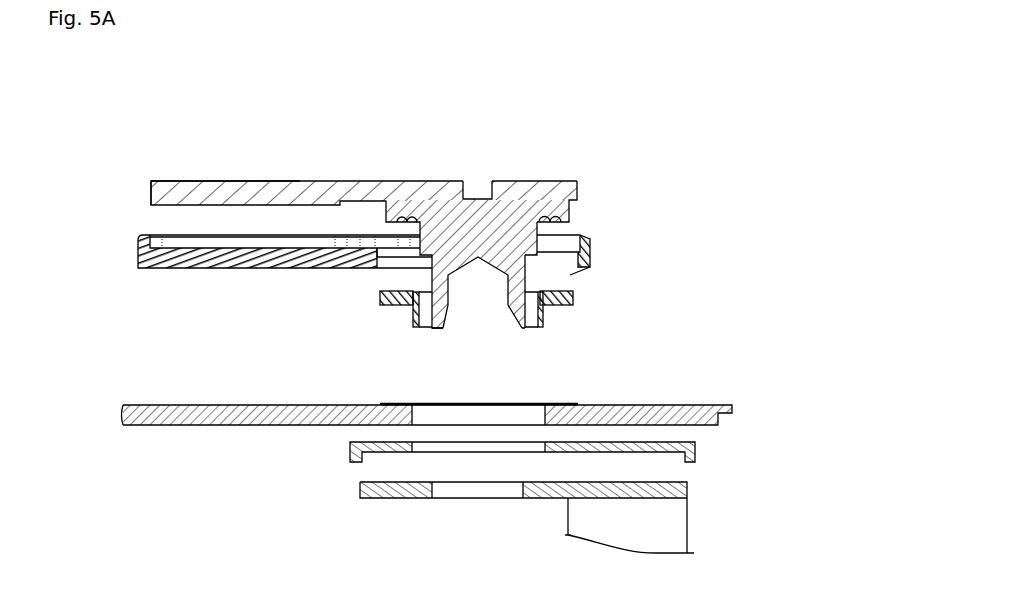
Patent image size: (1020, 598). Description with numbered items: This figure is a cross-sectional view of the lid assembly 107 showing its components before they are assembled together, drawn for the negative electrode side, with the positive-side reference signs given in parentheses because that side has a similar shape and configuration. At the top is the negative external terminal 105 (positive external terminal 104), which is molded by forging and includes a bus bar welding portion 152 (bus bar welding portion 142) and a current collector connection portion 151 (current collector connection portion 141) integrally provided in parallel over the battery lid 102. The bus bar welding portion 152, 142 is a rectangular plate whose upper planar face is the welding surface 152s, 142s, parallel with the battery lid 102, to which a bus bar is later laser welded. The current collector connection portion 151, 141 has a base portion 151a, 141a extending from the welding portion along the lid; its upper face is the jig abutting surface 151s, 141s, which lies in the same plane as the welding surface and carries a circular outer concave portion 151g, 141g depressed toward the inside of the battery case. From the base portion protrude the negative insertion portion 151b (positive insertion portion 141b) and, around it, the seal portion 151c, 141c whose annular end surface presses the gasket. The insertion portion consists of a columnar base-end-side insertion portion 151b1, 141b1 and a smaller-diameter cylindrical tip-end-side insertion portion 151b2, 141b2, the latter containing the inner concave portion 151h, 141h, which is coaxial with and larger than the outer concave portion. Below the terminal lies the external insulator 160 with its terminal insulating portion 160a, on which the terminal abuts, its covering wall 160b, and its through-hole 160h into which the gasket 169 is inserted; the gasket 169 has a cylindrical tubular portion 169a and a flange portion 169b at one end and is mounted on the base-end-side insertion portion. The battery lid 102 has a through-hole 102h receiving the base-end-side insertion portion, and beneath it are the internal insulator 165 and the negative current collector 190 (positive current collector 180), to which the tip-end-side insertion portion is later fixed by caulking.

The lid assembly 107 is at (755, 110).
The negative external terminal 105 is at (99, 150).
The positive external terminal 104 is at (150, 180).
The bus bar welding portion 152 is at (276, 164).
The bus bar welding portion 142 is at (187, 180).
The welding surface 152s is at (258, 139).
The welding surface 142s is at (278, 180).
The current collector connection portion 151 is at (539, 226).
The current collector connection portion 141 is at (573, 178).
The outer concave portion 151g is at (443, 161).
The outer concave portion 141g is at (473, 180).
The jig abutting surface 151s is at (539, 138).
The jig abutting surface 141s is at (530, 180).
The base portion 151a is at (666, 185).
The base portion 141a is at (582, 184).
The seal portion 151c is at (595, 201).
The seal portion 141c is at (570, 210).
The negative insertion portion 151b is at (661, 276).
The positive insertion portion 141b is at (530, 277).
The base-end-side insertion portion 151b1 is at (674, 251).
The base-end-side insertion portion 141b1 is at (537, 252).
The tip-end-side insertion portion 151b2 is at (595, 347).
The tip-end-side insertion portion 141b2 is at (525, 330).
The inner concave portion 151h is at (440, 322).
The inner concave portion 141h is at (458, 330).
The external insulator 160 is at (592, 240).
The terminal insulating portion 160a is at (175, 268).
The covering wall 160b is at (138, 243).
The through-hole 160h is at (570, 275).
The gasket 169 is at (380, 296).
The tubular portion 169a is at (413, 310).
The flange portion 169b is at (383, 303).
The battery lid 102 is at (192, 425).
The through-hole 102h is at (536, 405).
The internal insulator 165 is at (350, 462).
The negative current collector 190 is at (507, 537).
The positive current collector 180 is at (388, 500).